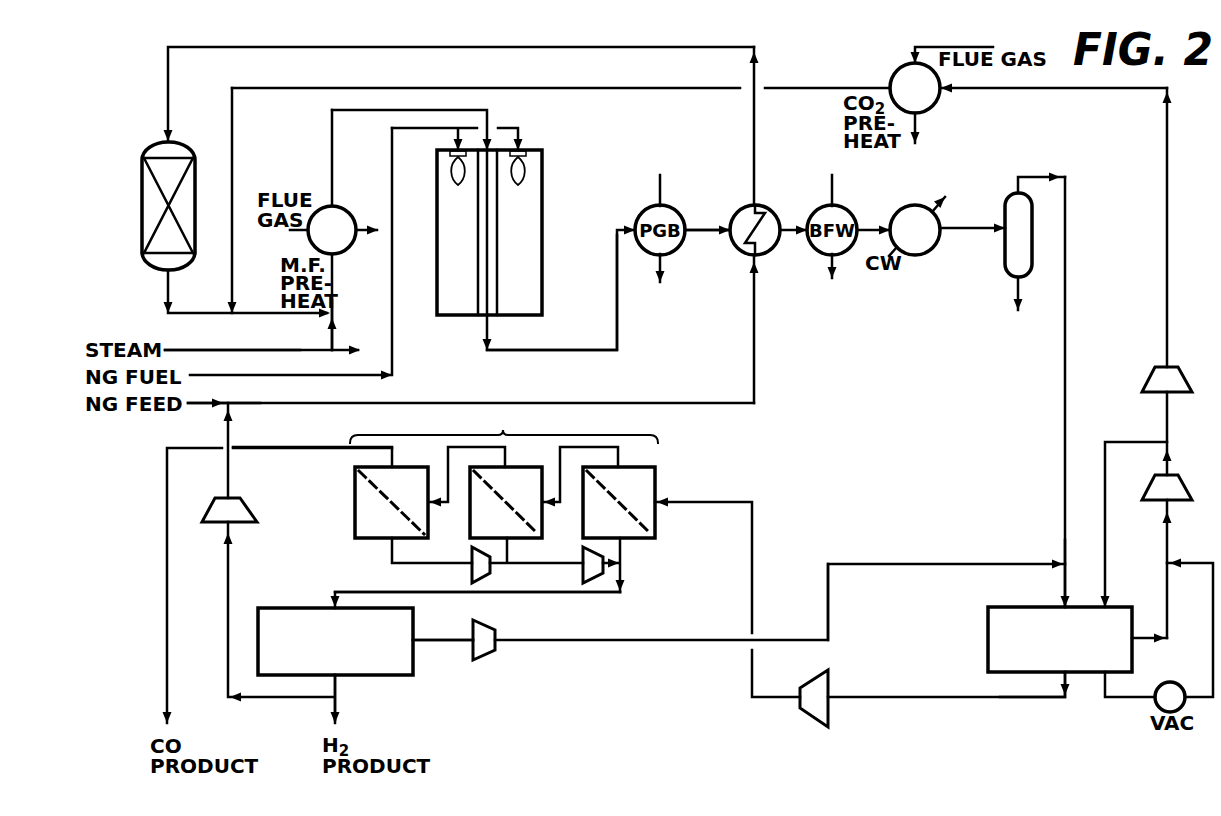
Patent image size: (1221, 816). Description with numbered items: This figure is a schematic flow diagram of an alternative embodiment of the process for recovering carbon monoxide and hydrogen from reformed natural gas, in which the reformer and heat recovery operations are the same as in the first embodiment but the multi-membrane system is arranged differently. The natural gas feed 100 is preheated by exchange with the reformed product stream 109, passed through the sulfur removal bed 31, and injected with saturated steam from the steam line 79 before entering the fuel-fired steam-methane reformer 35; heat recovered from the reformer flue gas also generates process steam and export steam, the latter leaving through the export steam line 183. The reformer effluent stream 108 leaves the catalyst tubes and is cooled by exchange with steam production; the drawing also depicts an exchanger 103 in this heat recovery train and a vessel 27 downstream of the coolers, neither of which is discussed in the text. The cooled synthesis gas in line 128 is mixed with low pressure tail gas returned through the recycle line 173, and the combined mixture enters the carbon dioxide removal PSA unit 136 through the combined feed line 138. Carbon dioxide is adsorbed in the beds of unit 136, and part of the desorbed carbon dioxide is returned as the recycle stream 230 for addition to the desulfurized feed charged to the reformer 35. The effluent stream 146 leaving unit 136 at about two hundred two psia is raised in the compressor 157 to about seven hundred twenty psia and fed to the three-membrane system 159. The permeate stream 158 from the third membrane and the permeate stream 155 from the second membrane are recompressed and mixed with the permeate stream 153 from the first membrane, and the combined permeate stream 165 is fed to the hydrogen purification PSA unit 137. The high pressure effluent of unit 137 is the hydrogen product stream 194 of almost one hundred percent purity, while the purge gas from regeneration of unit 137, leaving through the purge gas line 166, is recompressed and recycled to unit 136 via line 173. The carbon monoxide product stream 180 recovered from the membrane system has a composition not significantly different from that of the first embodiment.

The sulfur removal bed 31 is at (142, 196).
The steam-methane reformer 35 is at (542, 247).
The steam line 79 is at (280, 349).
The export steam line 183 is at (344, 350).
The natural gas feed 100 is at (192, 387).
The heat exchanger 103 is at (757, 152).
The reformed product stream 109 is at (701, 232).
The reformer effluent stream 108 is at (560, 349).
The separator 27 is at (1014, 295).
The cooled synthesis gas line 128 is at (1075, 290).
The carbon dioxide recycle stream 230 is at (1166, 298).
The carbon monoxide product stream 180 is at (166, 511).
The three-membrane system 159 is at (504, 425).
The permeate stream from membrane III 158 is at (397, 548).
The permeate stream from membrane II 155 is at (512, 548).
The permeate stream from membrane I 153 is at (625, 548).
The combined permeate stream 165 is at (546, 593).
The purge gas line 166 is at (450, 630).
The hydrogen purification PSA unit 137 is at (383, 675).
The hydrogen product stream 194 is at (338, 706).
The recycle line 173 is at (830, 597).
The combined feed line 138 is at (1062, 580).
The carbon dioxide removal PSA unit 136 is at (987, 640).
The carbon dioxide-free effluent stream 146 is at (1035, 697).
The compressor 157 is at (823, 730).